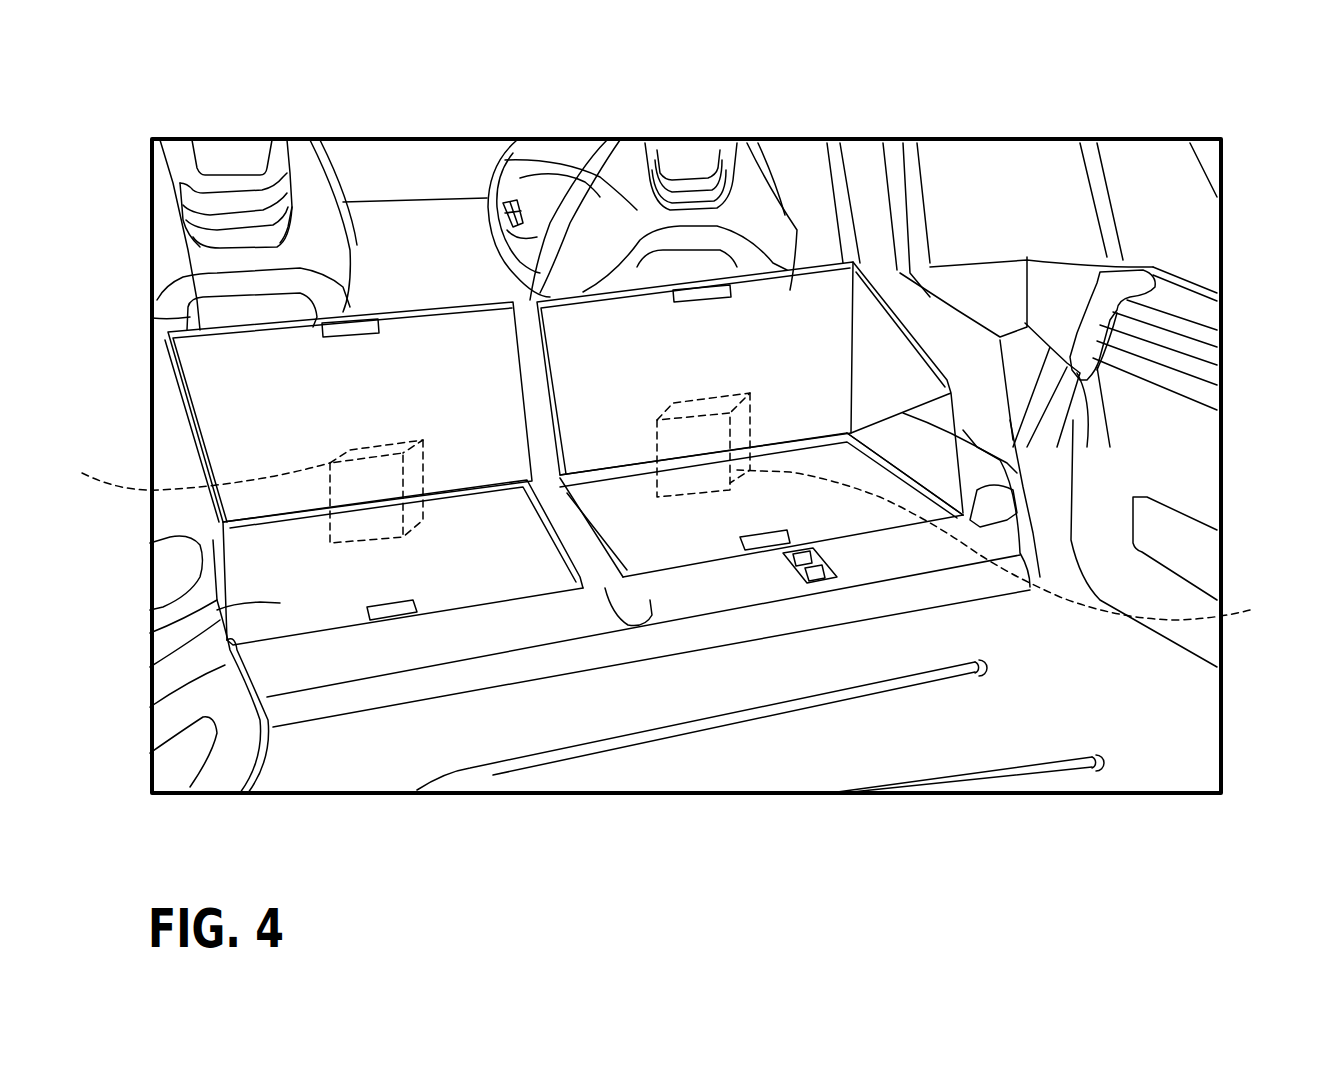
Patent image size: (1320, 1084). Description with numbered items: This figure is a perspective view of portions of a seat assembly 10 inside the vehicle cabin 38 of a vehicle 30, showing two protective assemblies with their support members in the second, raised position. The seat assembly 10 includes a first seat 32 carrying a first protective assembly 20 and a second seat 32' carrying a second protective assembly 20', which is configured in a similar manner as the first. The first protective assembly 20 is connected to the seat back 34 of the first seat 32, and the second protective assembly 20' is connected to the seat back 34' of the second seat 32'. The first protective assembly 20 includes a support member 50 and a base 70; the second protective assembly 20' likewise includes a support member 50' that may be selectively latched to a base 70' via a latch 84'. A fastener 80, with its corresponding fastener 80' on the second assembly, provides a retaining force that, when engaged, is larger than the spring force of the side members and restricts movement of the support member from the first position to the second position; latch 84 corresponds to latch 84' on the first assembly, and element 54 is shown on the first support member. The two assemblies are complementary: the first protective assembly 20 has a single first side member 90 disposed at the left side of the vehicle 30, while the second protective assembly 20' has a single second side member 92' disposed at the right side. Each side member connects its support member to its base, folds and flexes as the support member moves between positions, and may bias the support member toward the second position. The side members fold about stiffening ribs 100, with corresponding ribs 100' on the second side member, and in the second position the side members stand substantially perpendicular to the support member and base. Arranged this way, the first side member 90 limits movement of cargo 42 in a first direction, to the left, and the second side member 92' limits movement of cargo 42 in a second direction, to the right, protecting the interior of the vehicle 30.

The seat assembly 10 is at (113, 163).
The protective assembly 20 is at (403, 666).
The second protective assembly 20' is at (761, 645).
The vehicle 30 is at (1067, 190).
The seat 32 is at (403, 674).
The second seat 32' is at (856, 707).
The seat back 34 is at (405, 721).
The seat back of the second seat 34' is at (824, 685).
The vehicle cabin 38 is at (958, 190).
The cargo 42 is at (664, 541).
The support member 50 is at (287, 397).
The lid back panel 54 is at (258, 357).
The support member of the second protective assembly 50' is at (695, 264).
The base 70 is at (162, 664).
The base of the second protective assembly 70' is at (758, 659).
The fastener 80 is at (286, 687).
The second bin front face 80' is at (842, 640).
The handle 84 is at (386, 468).
The latch 84' is at (687, 462).
The first side member 90 is at (197, 457).
The second side member 92' is at (968, 287).
The ribs 100 is at (235, 491).
The second stored article (phantom) 100' is at (977, 446).